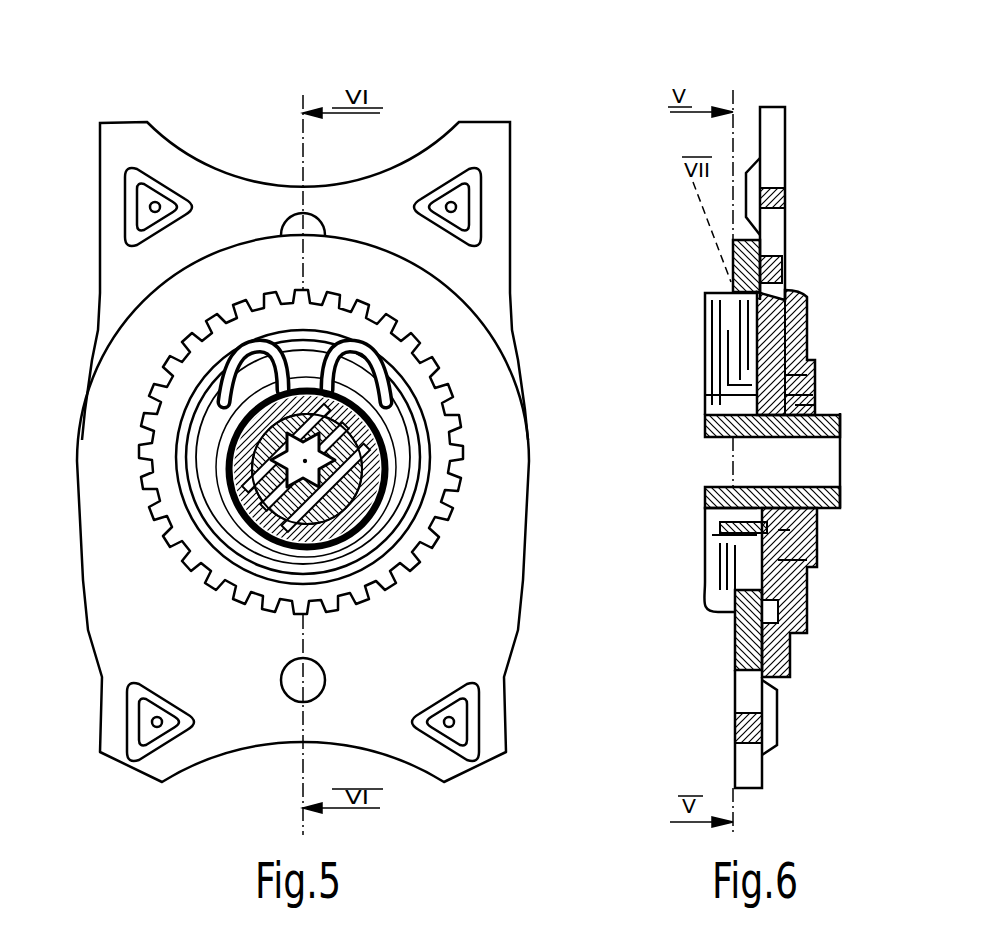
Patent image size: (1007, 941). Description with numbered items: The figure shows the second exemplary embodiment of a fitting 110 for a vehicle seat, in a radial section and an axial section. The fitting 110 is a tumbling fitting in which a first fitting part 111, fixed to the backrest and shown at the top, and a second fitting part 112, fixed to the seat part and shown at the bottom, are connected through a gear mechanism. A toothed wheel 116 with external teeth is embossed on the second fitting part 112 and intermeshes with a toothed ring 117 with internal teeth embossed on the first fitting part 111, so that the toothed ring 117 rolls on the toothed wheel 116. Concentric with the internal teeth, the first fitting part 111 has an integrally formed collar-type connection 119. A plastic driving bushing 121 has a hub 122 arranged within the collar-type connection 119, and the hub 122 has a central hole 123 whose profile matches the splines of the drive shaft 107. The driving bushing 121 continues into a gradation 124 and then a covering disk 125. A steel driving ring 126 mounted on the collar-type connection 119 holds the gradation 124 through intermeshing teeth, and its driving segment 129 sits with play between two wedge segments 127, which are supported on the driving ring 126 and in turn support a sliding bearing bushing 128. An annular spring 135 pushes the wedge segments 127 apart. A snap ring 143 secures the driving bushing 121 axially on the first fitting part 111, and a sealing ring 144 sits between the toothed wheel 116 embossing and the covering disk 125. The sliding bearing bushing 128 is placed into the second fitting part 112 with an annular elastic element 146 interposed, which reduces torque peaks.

In FIG. 5, the drive shaft 107 is at (307, 460).
In FIG. 5, the fitting 110 is at (116, 106).
In FIG. 6, the fitting 110 is at (818, 186).
In FIG. 5, the first fitting part 111 is at (478, 270).
In FIG. 6, the first fitting part 111 is at (805, 607).
In FIG. 5, the second fitting part 112 is at (477, 665).
In FIG. 6, the second fitting part 112 is at (737, 647).
In FIG. 5, the toothed wheel 116 is at (362, 403).
In FIG. 6, the toothed wheel 116 is at (807, 300).
In FIG. 6, the toothed ring 117 is at (787, 272).
In FIG. 6, the collar-type connection 119 is at (813, 402).
In FIG. 5, the driving bushing 121 is at (345, 485).
In FIG. 6, the driving bushing 121 is at (700, 430).
In FIG. 6, the hub 122 is at (840, 442).
In FIG. 6, the hole 123 is at (772, 462).
In FIG. 5, the gradation 124 is at (372, 540).
In FIG. 6, the gradation 124 is at (712, 483).
In FIG. 6, the covering disk 125 is at (700, 352).
In FIG. 5, the driving ring 126 is at (365, 512).
In FIG. 6, the driving ring 126 is at (813, 382).
In FIG. 5, the wedge segments 127 is at (235, 405).
In FIG. 6, the wedge segments 127 is at (808, 338).
In FIG. 5, the sliding bearing bushing 128 is at (410, 360).
In FIG. 6, the sliding bearing bushing 128 is at (812, 545).
In FIG. 5, the driving segment 129 is at (392, 595).
In FIG. 6, the driving segment 129 is at (817, 527).
In FIG. 5, the annular spring 135 is at (382, 345).
In FIG. 6, the annular spring 135 is at (813, 363).
In FIG. 6, the snap ring 143 is at (838, 416).
In FIG. 6, the sealing ring 144 is at (707, 290).
In FIG. 5, the elastic element 146 is at (322, 340).
In FIG. 6, the elastic element 146 is at (808, 568).